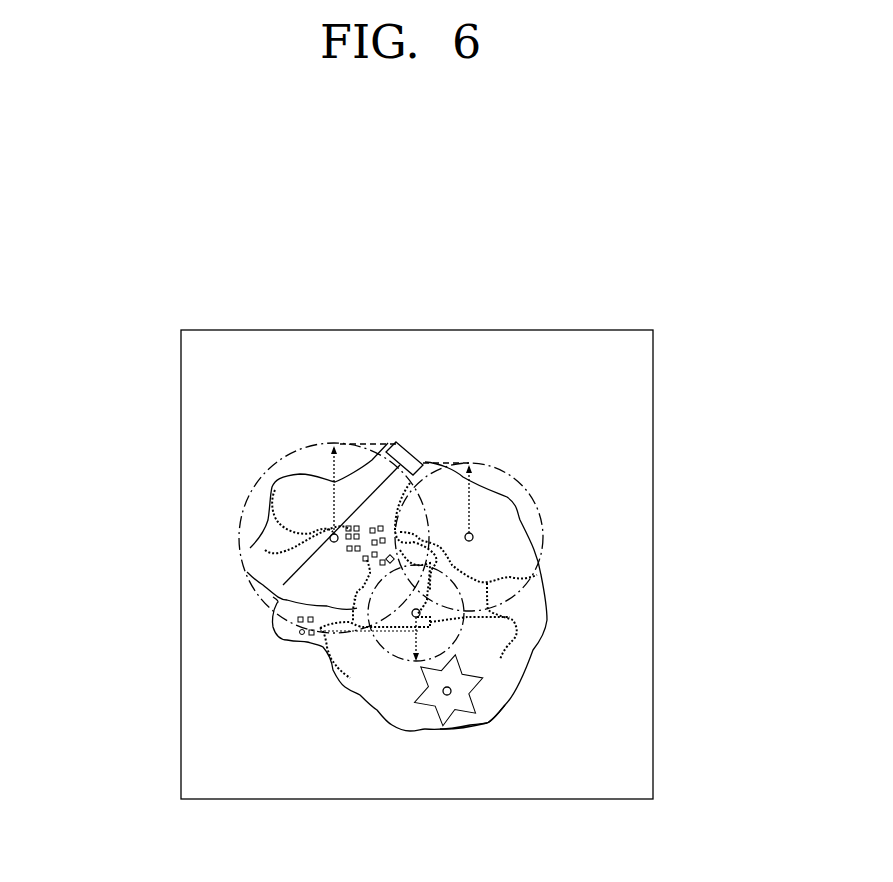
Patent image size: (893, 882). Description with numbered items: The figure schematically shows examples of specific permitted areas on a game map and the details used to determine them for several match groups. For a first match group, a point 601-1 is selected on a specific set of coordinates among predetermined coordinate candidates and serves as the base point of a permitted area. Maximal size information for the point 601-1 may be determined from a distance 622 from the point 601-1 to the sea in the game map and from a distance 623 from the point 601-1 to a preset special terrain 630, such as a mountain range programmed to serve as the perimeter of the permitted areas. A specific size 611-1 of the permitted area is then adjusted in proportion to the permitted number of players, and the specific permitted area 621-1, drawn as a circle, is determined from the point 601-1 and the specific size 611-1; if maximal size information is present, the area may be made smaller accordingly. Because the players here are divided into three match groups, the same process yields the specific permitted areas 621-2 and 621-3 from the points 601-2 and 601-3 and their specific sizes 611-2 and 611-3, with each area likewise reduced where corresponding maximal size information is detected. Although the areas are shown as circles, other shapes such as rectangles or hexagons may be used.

The point on the specific set of the coordinates 601-1 is at (252, 560).
The point on the specific set of the coordinates 601-2 is at (497, 500).
The point on the specific set of the coordinates 601-3 is at (433, 653).
The specific size 611-1 is at (337, 483).
The specific size 611-2 is at (470, 497).
The specific size 611-3 is at (533, 650).
The specific permitted area 621-1 is at (303, 441).
The specific permitted area 621-2 is at (548, 504).
The specific permitted area 621-3 is at (412, 669).
The distance from the point to sea 622 is at (250, 552).
The distance from the point to a preset special terrain 623 is at (374, 485).
The preset special terrain 630 is at (424, 457).